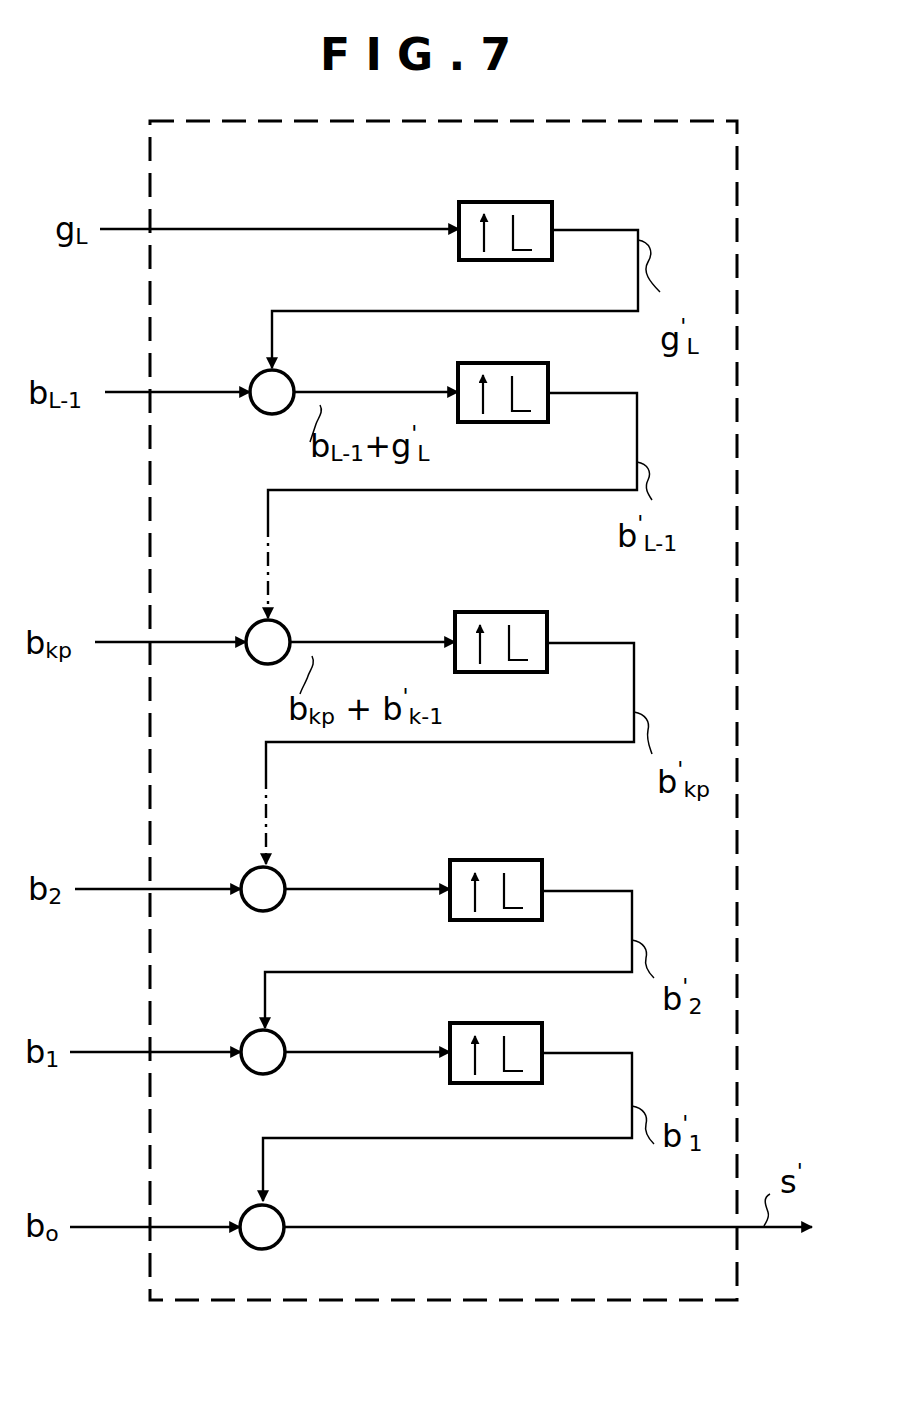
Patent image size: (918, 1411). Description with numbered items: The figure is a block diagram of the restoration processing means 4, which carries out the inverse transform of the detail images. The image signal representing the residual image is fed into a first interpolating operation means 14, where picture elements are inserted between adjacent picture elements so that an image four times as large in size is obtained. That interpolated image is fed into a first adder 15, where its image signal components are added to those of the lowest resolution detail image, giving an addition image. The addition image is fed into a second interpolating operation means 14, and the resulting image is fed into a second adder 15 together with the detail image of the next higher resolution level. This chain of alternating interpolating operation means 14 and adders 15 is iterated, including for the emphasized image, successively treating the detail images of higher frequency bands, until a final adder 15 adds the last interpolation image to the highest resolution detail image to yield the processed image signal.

The restoration processing means 4 is at (740, 322).
The interpolating operation means 14 is at (524, 201).
The adder 15 is at (296, 372).